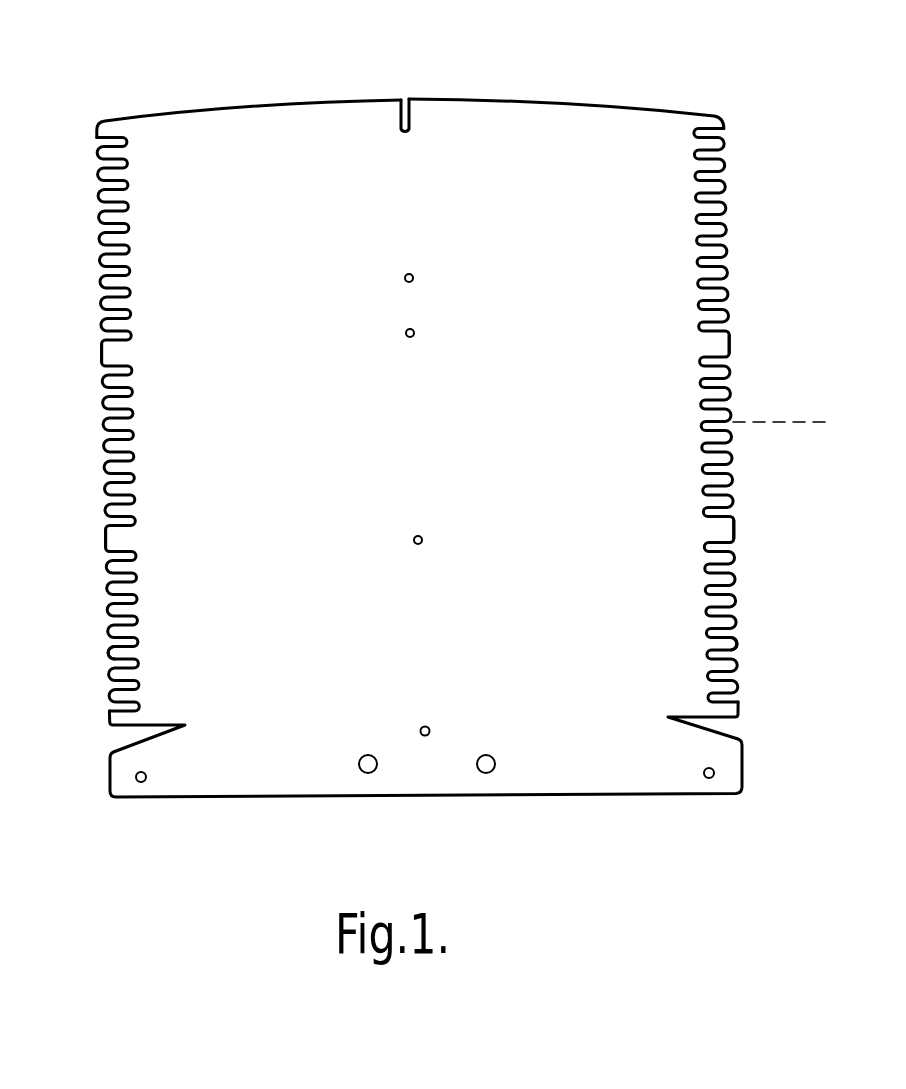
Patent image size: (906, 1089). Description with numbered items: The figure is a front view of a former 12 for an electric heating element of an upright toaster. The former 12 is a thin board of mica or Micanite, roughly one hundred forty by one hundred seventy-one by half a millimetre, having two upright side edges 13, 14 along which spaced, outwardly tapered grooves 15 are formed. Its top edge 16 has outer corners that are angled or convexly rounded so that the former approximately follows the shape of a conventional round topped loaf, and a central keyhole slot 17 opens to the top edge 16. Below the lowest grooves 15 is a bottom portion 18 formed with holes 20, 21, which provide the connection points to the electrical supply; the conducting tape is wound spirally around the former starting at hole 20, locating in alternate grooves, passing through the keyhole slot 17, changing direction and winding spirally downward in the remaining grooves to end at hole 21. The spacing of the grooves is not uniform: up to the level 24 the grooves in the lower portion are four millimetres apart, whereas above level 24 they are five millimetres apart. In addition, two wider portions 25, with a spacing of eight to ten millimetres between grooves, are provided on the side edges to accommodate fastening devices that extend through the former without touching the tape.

The former 12 is at (444, 436).
The upright side edge 13 is at (98, 404).
The upright side edge 14 is at (730, 450).
The grooves 15 is at (735, 587).
The top edge 16 is at (350, 100).
The keyhole slot 17 is at (411, 117).
The bottom portion 18 is at (248, 772).
The hole 20 is at (369, 773).
The hole 21 is at (487, 773).
The level 24 is at (797, 422).
The wider portions 25 is at (723, 525).